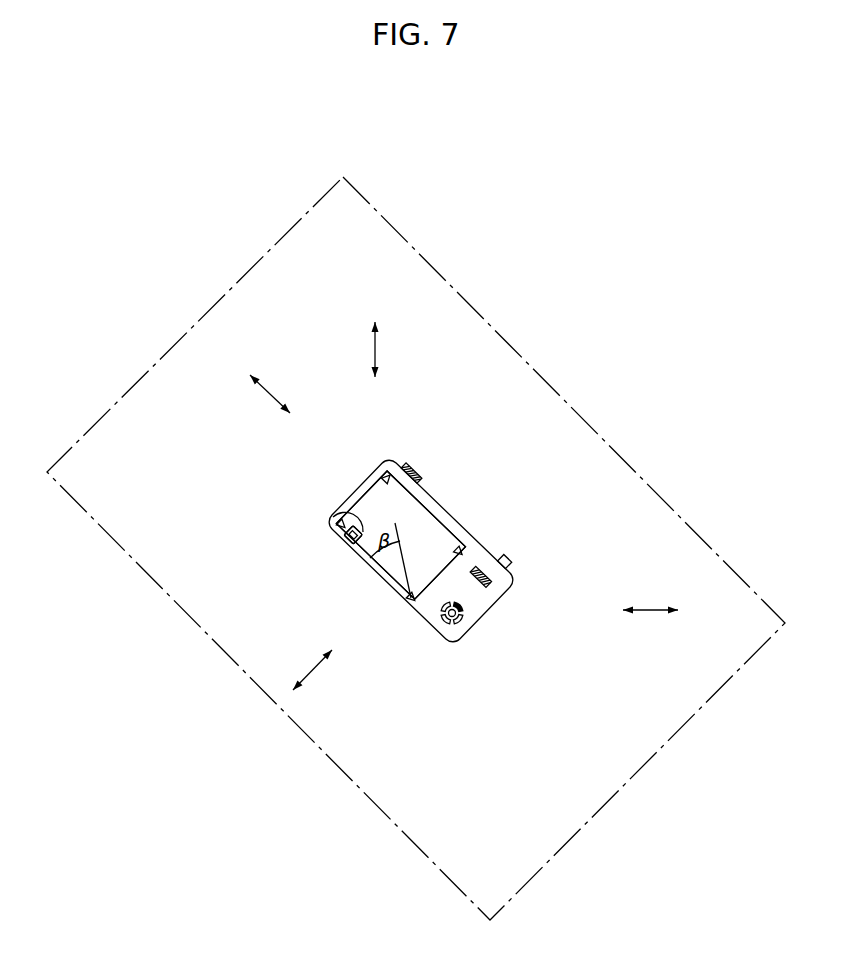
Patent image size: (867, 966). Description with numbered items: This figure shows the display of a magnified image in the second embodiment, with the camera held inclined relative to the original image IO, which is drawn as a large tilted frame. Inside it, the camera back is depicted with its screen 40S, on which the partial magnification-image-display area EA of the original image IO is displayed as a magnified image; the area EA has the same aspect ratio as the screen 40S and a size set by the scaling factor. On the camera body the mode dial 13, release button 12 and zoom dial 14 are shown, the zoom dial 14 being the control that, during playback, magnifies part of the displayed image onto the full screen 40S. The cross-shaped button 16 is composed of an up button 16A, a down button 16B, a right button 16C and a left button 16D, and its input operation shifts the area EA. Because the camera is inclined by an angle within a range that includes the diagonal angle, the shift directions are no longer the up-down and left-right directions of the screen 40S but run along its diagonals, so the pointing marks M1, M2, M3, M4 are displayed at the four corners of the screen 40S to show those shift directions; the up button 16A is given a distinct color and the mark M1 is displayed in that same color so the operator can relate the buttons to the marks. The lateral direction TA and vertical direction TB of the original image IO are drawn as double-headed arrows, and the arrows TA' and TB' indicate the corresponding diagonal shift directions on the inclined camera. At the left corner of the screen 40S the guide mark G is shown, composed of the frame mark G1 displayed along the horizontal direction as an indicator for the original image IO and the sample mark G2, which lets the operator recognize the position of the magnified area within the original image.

The original image IO is at (580, 794).
The lateral direction TA is at (281, 387).
The shake correction direction TA' is at (401, 349).
The vertical direction TB is at (329, 685).
The shake correction direction TB' is at (650, 632).
The screen 40S is at (413, 492).
The magnification-image-display area EA is at (428, 510).
The release button 12 is at (514, 558).
The mode dial 13 is at (415, 461).
The zoom dial 14 is at (492, 582).
The cross-shaped button 16 is at (453, 652).
The up button 16A is at (468, 606).
The down button 16B is at (439, 622).
The right button 16C is at (434, 607).
The left button 16D is at (465, 626).
The pointing mark M1 is at (384, 476).
The pointing mark M2 is at (397, 598).
The pointing mark M3 is at (331, 522).
The pointing mark M4 is at (462, 545).
The guide mark G is at (366, 548).
The frame mark G1 is at (345, 513).
The sample mark G2 is at (333, 537).